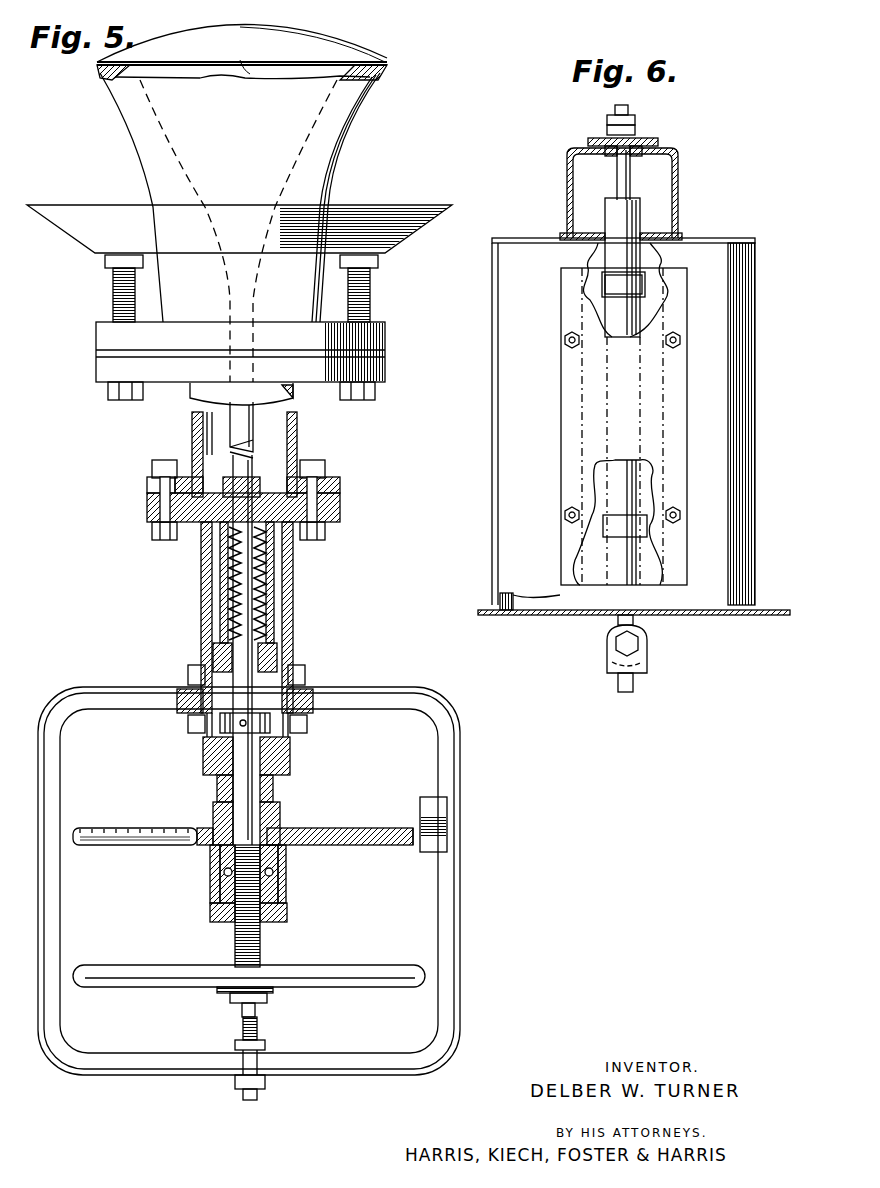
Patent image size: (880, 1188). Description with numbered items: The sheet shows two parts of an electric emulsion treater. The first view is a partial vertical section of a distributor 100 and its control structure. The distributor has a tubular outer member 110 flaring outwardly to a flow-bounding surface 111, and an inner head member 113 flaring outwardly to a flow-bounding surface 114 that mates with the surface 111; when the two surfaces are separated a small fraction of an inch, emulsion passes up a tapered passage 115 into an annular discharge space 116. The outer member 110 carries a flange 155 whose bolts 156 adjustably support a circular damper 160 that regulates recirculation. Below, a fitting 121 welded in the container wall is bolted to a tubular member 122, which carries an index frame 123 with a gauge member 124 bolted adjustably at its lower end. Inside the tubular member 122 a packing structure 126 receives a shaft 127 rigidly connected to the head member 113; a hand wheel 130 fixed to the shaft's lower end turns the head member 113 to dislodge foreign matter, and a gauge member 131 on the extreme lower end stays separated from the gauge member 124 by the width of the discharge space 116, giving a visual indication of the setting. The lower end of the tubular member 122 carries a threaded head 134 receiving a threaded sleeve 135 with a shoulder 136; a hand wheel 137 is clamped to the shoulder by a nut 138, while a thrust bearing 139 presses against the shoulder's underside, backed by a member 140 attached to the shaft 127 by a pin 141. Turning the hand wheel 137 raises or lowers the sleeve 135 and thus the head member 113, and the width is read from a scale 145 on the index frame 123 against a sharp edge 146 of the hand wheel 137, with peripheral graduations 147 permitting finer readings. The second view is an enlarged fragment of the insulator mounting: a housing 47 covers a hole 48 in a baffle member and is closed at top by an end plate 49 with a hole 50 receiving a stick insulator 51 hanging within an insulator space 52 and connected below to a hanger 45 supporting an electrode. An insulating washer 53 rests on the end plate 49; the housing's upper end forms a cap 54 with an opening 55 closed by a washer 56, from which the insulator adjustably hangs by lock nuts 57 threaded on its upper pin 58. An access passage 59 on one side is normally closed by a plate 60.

In FIG. 5, the distributor 100 is at (128, 164).
In FIG. 5, the tubular outer member 110 is at (342, 158).
In FIG. 5, the flow-bounding surface 111 is at (383, 55).
In FIG. 5, the head member 113 is at (322, 35).
In FIG. 5, the flow-bounding surface 114 is at (100, 76).
In FIG. 5, the tapered passage 115 is at (362, 80).
In FIG. 5, the annular discharge space 116 is at (385, 66).
In FIG. 5, the damper 160 is at (405, 237).
In FIG. 5, the bolts 156 is at (372, 285).
In FIG. 5, the flange 155 is at (387, 336).
In FIG. 5, the fitting 121 is at (297, 438).
In FIG. 5, the tubular member 122 is at (292, 608).
In FIG. 5, the packing structure 126 is at (225, 553).
In FIG. 5, the shaft 127 is at (238, 600).
In FIG. 5, the index frame 123 is at (370, 692).
In FIG. 5, the threaded head 134 is at (278, 766).
In FIG. 5, the threaded sleeve 135 is at (218, 786).
In FIG. 5, the nut 138 is at (278, 820).
In FIG. 5, the hand wheel 137 is at (354, 828).
In FIG. 5, the peripheral graduations 147 is at (124, 828).
In FIG. 5, the scale 145 is at (448, 818).
In FIG. 5, the sharp edge 146 is at (445, 840).
In FIG. 5, the shoulder 136 is at (216, 868).
In FIG. 5, the thrust bearing 139 is at (212, 880).
In FIG. 5, the member 140 is at (220, 922).
In FIG. 5, the pin 141 is at (270, 922).
In FIG. 5, the hand wheel 130 is at (346, 968).
In FIG. 5, the gauge member 131 is at (255, 1012).
In FIG. 5, the gauge member 124 is at (258, 1030).
In FIG. 6, the lock nuts 57 is at (606, 128).
In FIG. 6, the washer 56 is at (645, 140).
In FIG. 6, the opening 55 is at (634, 158).
In FIG. 6, the upper pin 58 is at (616, 178).
In FIG. 6, the cap 54 is at (680, 192).
In FIG. 6, the washer 53 is at (585, 232).
In FIG. 6, the end plate 49 is at (716, 240).
In FIG. 6, the housing 47 is at (752, 496).
In FIG. 6, the hole 50 is at (650, 250).
In FIG. 6, the access passage 59 is at (655, 290).
In FIG. 6, the plate 60 is at (680, 368).
In FIG. 6, the stick insulator 51 is at (630, 482).
In FIG. 6, the insulator space 52 is at (503, 594).
In FIG. 6, the hole 48 is at (743, 616).
In FIG. 6, the hanger 45 is at (633, 688).